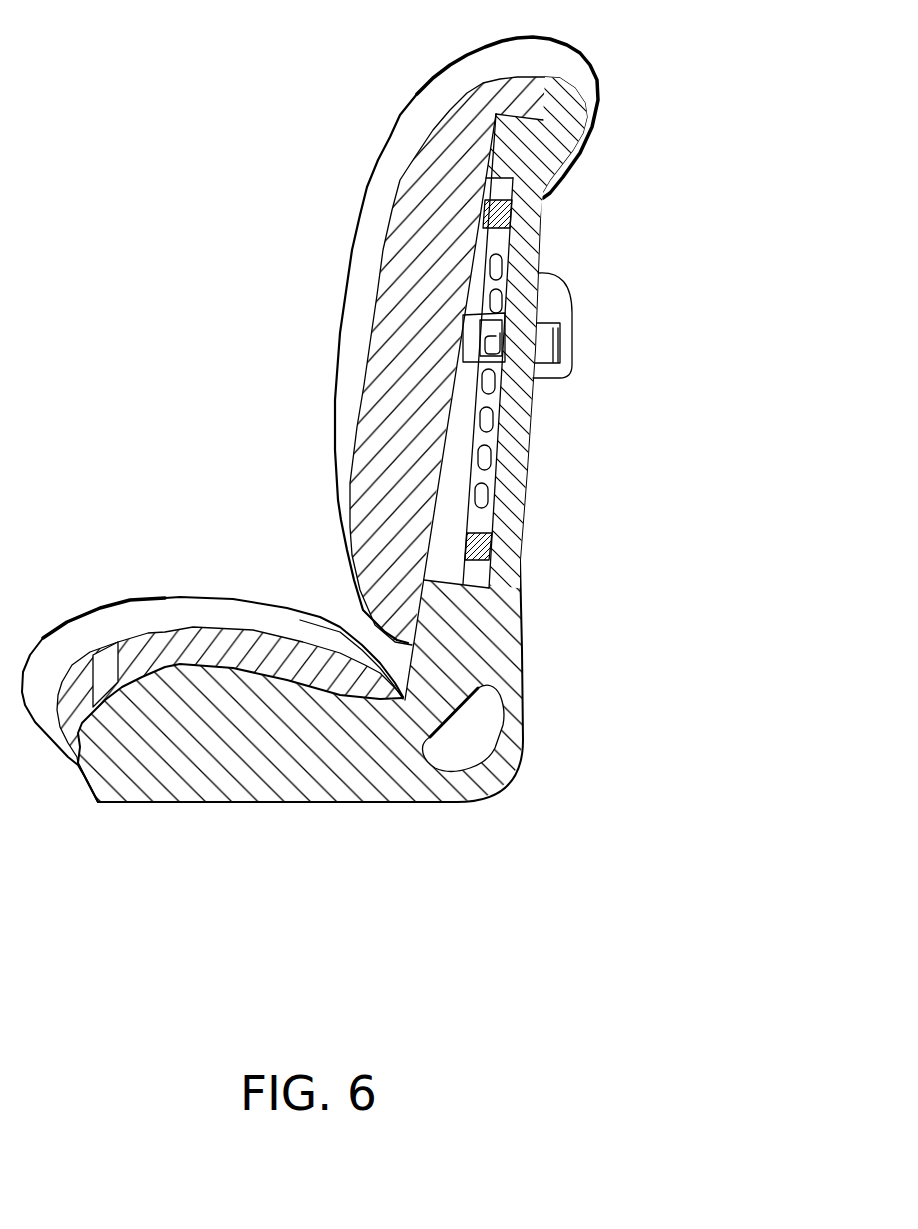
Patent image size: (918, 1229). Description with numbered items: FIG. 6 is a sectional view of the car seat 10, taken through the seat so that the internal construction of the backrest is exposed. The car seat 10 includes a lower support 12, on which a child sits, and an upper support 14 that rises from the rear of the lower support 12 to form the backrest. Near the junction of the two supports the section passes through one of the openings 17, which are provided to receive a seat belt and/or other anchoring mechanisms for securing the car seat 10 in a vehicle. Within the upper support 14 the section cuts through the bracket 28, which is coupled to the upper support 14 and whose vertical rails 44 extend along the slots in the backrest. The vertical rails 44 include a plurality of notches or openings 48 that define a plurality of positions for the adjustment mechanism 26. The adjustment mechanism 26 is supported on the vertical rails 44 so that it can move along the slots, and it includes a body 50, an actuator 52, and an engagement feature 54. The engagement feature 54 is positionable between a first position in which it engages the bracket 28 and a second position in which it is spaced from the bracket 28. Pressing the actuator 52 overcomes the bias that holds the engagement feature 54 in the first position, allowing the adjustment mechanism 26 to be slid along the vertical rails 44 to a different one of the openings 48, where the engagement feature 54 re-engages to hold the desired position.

The car seat 10 is at (372, 441).
The lower support 12 is at (173, 772).
The upper support 14 is at (390, 178).
The openings 17 is at (473, 740).
The adjustment mechanism 26 is at (479, 388).
The bracket 28 is at (508, 222).
The vertical rails 44 is at (563, 341).
The openings 48 is at (490, 458).
The body 50 is at (609, 314).
The actuators 52 is at (543, 345).
The engagement features 54 is at (466, 337).